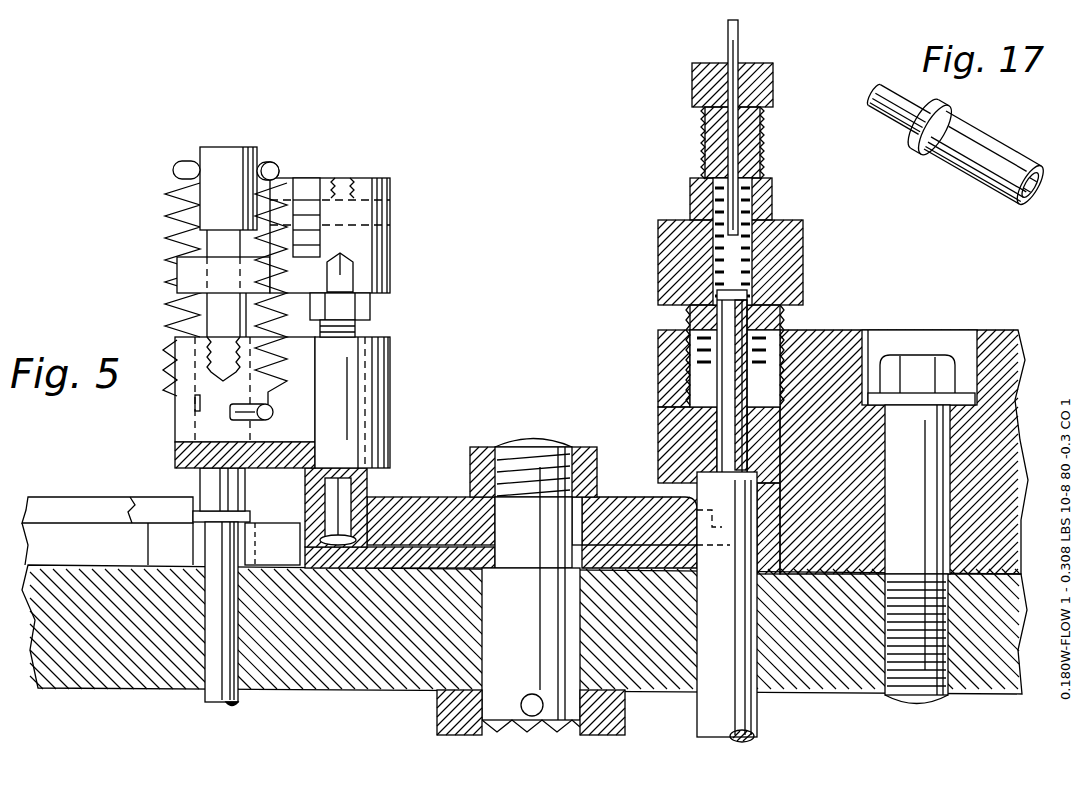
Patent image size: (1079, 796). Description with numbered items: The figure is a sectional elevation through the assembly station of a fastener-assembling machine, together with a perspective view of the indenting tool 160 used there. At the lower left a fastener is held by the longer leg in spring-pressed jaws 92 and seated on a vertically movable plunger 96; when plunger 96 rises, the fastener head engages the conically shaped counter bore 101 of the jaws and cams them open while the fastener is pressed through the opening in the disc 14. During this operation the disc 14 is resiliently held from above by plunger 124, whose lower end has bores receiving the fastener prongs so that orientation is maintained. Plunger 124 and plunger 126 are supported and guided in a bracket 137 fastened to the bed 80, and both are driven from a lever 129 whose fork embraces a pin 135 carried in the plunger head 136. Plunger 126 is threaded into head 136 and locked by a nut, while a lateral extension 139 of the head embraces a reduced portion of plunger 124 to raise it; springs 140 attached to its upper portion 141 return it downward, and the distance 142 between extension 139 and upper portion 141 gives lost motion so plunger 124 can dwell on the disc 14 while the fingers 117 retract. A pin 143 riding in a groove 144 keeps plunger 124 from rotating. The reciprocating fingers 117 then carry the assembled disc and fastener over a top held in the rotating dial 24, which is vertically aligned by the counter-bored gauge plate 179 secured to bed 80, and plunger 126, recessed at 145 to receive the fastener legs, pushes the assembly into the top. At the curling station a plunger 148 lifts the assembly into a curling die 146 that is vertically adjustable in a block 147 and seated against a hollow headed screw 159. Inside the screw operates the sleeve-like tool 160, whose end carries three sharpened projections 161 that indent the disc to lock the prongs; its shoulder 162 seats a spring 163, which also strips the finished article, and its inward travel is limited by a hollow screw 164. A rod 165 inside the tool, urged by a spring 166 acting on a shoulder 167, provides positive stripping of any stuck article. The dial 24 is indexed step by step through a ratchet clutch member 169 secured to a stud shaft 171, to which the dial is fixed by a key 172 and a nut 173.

In FIG. 5, the disc 14 is at (203, 521).
In FIG. 5, the rotating dial 24 is at (616, 497).
In FIG. 5, the bed 80 is at (986, 692).
In FIG. 5, the jaws 92 is at (180, 566).
In FIG. 5, the plunger 96 is at (208, 701).
In FIG. 5, the conically shaped counter bore 101 is at (248, 546).
In FIG. 5, the fingers 117 is at (66, 496).
In FIG. 5, the plunger 124 is at (245, 498).
In FIG. 5, the plunger 126 is at (352, 497).
In FIG. 5, the lever 129 is at (310, 181).
In FIG. 5, the pin 135 is at (322, 200).
In FIG. 5, the plunger head 136 is at (392, 277).
In FIG. 5, the bracket 137 is at (180, 430).
In FIG. 5, the lateral extension 139 is at (185, 264).
In FIG. 5, the springs 140 is at (176, 313).
In FIG. 5, the upper portion 141 is at (256, 147).
In FIG. 5, the distance 142 is at (168, 236).
In FIG. 5, the pin 143 is at (170, 381).
In FIG. 5, the groove 144 is at (198, 406).
In FIG. 5, the recess 145 is at (386, 468).
In FIG. 5, the curling die 146 is at (693, 434).
In FIG. 5, the block 147 is at (853, 330).
In FIG. 5, the plunger 148 is at (758, 721).
In FIG. 5, the hollow headed screw 159 is at (660, 241).
In FIG. 5, the tool 160 is at (712, 433).
In FIG. 17, the tool 160 is at (962, 184).
In FIG. 17, the sharpened projections 161 is at (1028, 197).
In FIG. 17, the shoulder 162 is at (912, 170).
In FIG. 5, the spring 163 is at (692, 343).
In FIG. 5, the hollow screw 164 is at (692, 93).
In FIG. 5, the rod 165 is at (740, 46).
In FIG. 5, the spring 166 is at (774, 234).
In FIG. 5, the shoulder 167 is at (770, 291).
In FIG. 5, the clutch member 169 is at (437, 703).
In FIG. 5, the stud shaft 171 is at (516, 715).
In FIG. 5, the key 172 is at (574, 508).
In FIG. 5, the nut 173 is at (486, 447).
In FIG. 5, the counter-bored gauge plate 179 is at (435, 548).